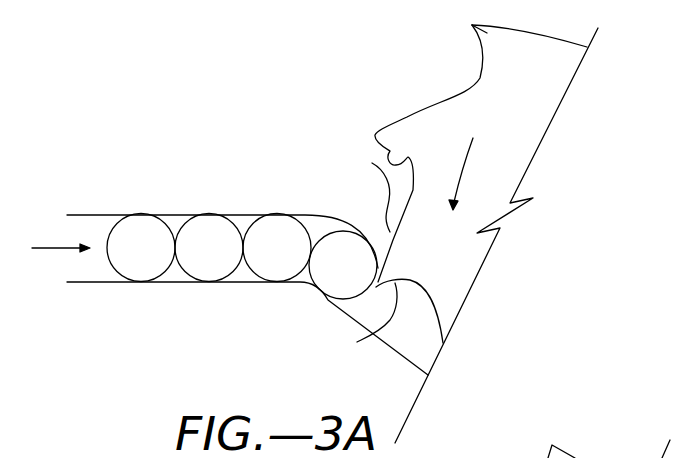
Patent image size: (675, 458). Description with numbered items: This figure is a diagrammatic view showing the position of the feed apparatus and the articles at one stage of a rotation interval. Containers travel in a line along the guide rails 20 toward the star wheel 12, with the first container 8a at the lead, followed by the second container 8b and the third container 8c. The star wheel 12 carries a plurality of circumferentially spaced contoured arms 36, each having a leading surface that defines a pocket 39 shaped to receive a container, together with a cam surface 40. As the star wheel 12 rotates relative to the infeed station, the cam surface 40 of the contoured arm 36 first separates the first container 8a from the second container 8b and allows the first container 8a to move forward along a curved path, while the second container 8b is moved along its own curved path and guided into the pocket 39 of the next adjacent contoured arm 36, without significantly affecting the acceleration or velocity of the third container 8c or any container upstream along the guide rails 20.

The star wheel 12 is at (523, 110).
The guide rails 20 is at (173, 213).
The first container 8a is at (348, 267).
The second container 8b is at (275, 250).
The third container 8c is at (207, 248).
The contoured arm 36 is at (472, 25).
The pocket 39 is at (483, 53).
The cam surface 40 is at (369, 186).